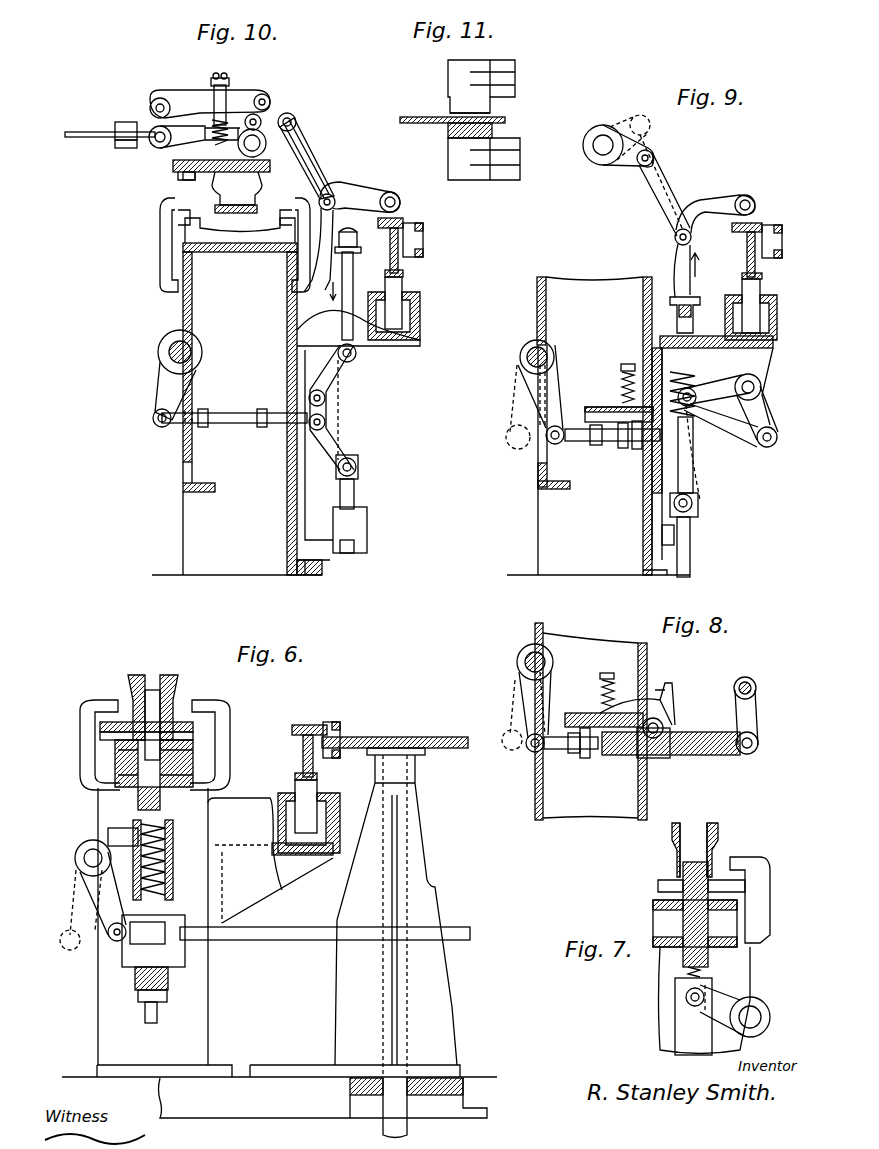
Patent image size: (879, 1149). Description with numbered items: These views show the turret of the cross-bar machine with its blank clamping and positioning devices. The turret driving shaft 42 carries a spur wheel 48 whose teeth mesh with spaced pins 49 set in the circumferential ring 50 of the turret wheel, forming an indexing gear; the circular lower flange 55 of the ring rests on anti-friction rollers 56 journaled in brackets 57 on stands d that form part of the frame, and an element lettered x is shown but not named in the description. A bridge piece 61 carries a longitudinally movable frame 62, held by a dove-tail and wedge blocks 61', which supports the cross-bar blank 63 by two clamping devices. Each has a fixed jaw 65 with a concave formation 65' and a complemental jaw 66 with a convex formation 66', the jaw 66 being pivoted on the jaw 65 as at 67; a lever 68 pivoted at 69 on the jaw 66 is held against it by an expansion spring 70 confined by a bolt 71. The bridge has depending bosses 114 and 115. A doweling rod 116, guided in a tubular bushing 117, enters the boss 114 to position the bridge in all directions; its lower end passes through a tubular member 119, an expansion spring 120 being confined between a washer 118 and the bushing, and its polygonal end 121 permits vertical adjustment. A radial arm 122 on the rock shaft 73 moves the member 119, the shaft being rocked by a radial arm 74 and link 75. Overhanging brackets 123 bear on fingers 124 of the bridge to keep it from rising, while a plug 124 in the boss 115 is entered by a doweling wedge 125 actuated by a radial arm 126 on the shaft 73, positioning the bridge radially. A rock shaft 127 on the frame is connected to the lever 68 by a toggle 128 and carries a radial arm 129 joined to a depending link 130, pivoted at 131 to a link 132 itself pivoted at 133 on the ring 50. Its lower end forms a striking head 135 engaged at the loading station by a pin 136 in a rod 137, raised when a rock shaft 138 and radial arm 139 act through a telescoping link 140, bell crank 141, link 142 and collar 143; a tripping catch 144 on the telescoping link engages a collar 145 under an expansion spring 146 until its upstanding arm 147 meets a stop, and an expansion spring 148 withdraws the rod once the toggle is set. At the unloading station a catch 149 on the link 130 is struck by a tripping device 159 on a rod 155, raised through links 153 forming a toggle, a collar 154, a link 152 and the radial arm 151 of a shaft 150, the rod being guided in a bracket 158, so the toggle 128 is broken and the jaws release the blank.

In FIG. 6, the turret driving shaft 42 is at (385, 1115).
In FIG. 6, the spur wheel 48 is at (395, 737).
In FIG. 10, the spaced pins 49 is at (420, 238).
In FIG. 9, the spaced pins 49 is at (782, 242).
In FIG. 6, the spaced pins 49 is at (336, 725).
In FIG. 10, the circumferential ring 50 is at (390, 252).
In FIG. 9, the circumferential ring 50 is at (760, 225).
In FIG. 6, the circumferential ring 50 is at (313, 725).
In FIG. 10, the circular lower flange 55 is at (404, 274).
In FIG. 9, the circular lower flange 55 is at (762, 276).
In FIG. 6, the circular lower flange 55 is at (298, 776).
In FIG. 10, the anti-friction rollers 56 is at (388, 298).
In FIG. 9, the anti-friction rollers 56 is at (762, 296).
In FIG. 6, the anti-friction rollers 56 is at (310, 797).
In FIG. 10, the brackets 57 is at (385, 350).
In FIG. 9, the brackets 57 is at (776, 341).
In FIG. 6, the brackets 57 is at (225, 806).
In FIG. 10, the bridge piece 61 is at (209, 186).
In FIG. 10, the wedge blocks 61' is at (160, 180).
In FIG. 10, the clamping frame 62 is at (300, 144).
In FIG. 10, the cross-bar blank 63 is at (82, 132).
In FIG. 11, the cross-bar blank 63 is at (436, 124).
In FIG. 10, the fixed jaw 65 is at (101, 147).
In FIG. 11, the fixed jaw 65 is at (469, 159).
In FIG. 11, the concave formation 65' is at (492, 131).
In FIG. 10, the complemental jaw 66 is at (117, 109).
In FIG. 11, the complemental jaw 66 is at (460, 86).
In FIG. 11, the convex formation 66' is at (491, 105).
In FIG. 10, the pivot 67 is at (152, 146).
In FIG. 10, the lever 68 is at (240, 90).
In FIG. 10, the pivot 69 is at (160, 97).
In FIG. 10, the expansion spring 70 is at (232, 130).
In FIG. 10, the bolt 71 is at (220, 77).
In FIG. 6, the rock shaft 73 is at (78, 866).
In FIG. 7, the rock shaft 73 is at (770, 1017).
In FIG. 6, the radial arm 74 is at (102, 920).
In FIG. 6, the link 75 is at (290, 941).
In FIG. 6, the depending boss 114 is at (175, 686).
In FIG. 7, the depending boss 115 is at (720, 838).
In FIG. 6, the doweling rod 116 is at (153, 685).
In FIG. 6, the tubular bushing 117 is at (166, 797).
In FIG. 6, the washer 118 is at (140, 977).
In FIG. 6, the tubular member 119 is at (165, 915).
In FIG. 6, the expansion spring 120 is at (168, 862).
In FIG. 6, the polygonal end 121 is at (150, 1016).
In FIG. 6, the radial arm 122 is at (108, 832).
In FIG. 10, the overhanging brackets 123 is at (168, 238).
In FIG. 6, the overhanging brackets 123 is at (80, 713).
In FIG. 7, the overhanging brackets 123 is at (770, 900).
In FIG. 10, the fingers 124 is at (206, 230).
In FIG. 6, the fingers 124 is at (100, 736).
In FIG. 7, the fingers 124 is at (690, 860).
In FIG. 7, the doweling wedge 125 is at (683, 891).
In FIG. 7, the radial arm 126 is at (706, 990).
In FIG. 10, the rock shaft 127 is at (303, 140).
In FIG. 9, the rock shaft 127 is at (603, 135).
In FIG. 10, the toggle 128 is at (260, 118).
In FIG. 10, the radial arm 129 is at (293, 116).
In FIG. 9, the radial arm 129 is at (628, 166).
In FIG. 10, the depending link 130 is at (312, 158).
In FIG. 9, the depending link 130 is at (664, 180).
In FIG. 10, the pivot 131 is at (330, 193).
In FIG. 9, the pivot 131 is at (675, 238).
In FIG. 10, the link 132 is at (360, 186).
In FIG. 9, the link 132 is at (720, 200).
In FIG. 9, the pivot 133 is at (753, 199).
In FIG. 10, the striking head 135 is at (318, 278).
In FIG. 9, the striking head 135 is at (673, 292).
In FIG. 9, the pin 136 is at (670, 304).
In FIG. 9, the rod 137 is at (692, 569).
In FIG. 9, the rock shaft 138 is at (520, 356).
In FIG. 8, the rock shaft 138 is at (528, 652).
In FIG. 9, the radial arm 139 is at (532, 392).
In FIG. 8, the radial arm 139 is at (525, 696).
In FIG. 9, the telescoping link 140 is at (745, 448).
In FIG. 8, the telescoping link 140 is at (655, 757).
In FIG. 9, the bell crank 141 is at (770, 404).
In FIG. 8, the bell crank 141 is at (760, 713).
In FIG. 9, the link 142 is at (694, 466).
In FIG. 9, the collar 143 is at (700, 506).
In FIG. 9, the tripping catch 144 is at (597, 405).
In FIG. 8, the tripping catch 144 is at (590, 712).
In FIG. 9, the collar 145 is at (611, 447).
In FIG. 8, the collar 145 is at (586, 755).
In FIG. 9, the expansion spring 146 is at (626, 368).
In FIG. 8, the expansion spring 146 is at (615, 680).
In FIG. 8, the upstanding arm 147 is at (672, 692).
In FIG. 9, the expansion spring 148 is at (698, 382).
In FIG. 9, the catch 149 is at (700, 280).
In FIG. 10, the shaft 150 is at (158, 352).
In FIG. 10, the radial arm 151 is at (150, 396).
In FIG. 10, the link 152 is at (236, 413).
In FIG. 10, the toggle links 153 is at (338, 392).
In FIG. 10, the collar 154 is at (360, 470).
In FIG. 10, the rod 155 is at (356, 499).
In FIG. 10, the bracket 158 is at (368, 532).
In FIG. 10, the tripping device 159 is at (346, 232).
In FIG. 10, the stands d is at (182, 506).
In FIG. 9, the stands d is at (567, 278).
In FIG. 6, the stands d is at (211, 986).
In FIG. 8, the stands d is at (535, 805).
In FIG. 7, the stands d is at (752, 958).
In FIG. 6, the column x is at (412, 818).